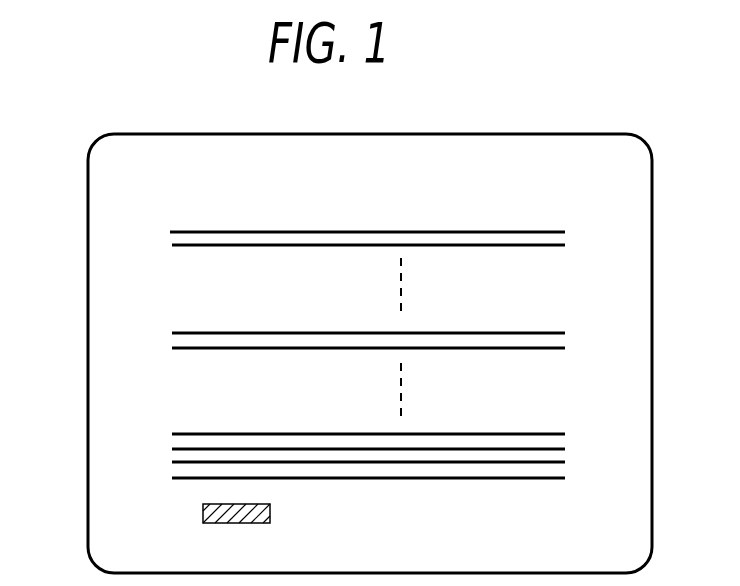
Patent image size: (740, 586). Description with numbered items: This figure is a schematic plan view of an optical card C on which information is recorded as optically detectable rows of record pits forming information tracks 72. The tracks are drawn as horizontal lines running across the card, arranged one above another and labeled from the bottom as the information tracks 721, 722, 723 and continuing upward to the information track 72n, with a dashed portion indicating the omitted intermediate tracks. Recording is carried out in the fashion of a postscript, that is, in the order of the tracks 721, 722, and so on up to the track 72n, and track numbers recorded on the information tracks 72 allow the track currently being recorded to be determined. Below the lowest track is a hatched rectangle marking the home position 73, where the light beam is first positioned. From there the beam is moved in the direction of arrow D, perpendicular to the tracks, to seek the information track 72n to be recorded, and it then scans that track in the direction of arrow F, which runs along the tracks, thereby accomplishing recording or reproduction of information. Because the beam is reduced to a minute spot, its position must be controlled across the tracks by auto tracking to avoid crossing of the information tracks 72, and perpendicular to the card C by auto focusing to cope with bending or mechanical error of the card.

The information tracks 72 is at (356, 364).
The information track 72n is at (336, 353).
The information track 723 is at (338, 427).
The information track 722 is at (338, 455).
The information track 721 is at (338, 482).
The home position 73 is at (271, 508).
The optical card C is at (652, 181).
The arrow D is at (37, 442).
The arrow F is at (480, 98).